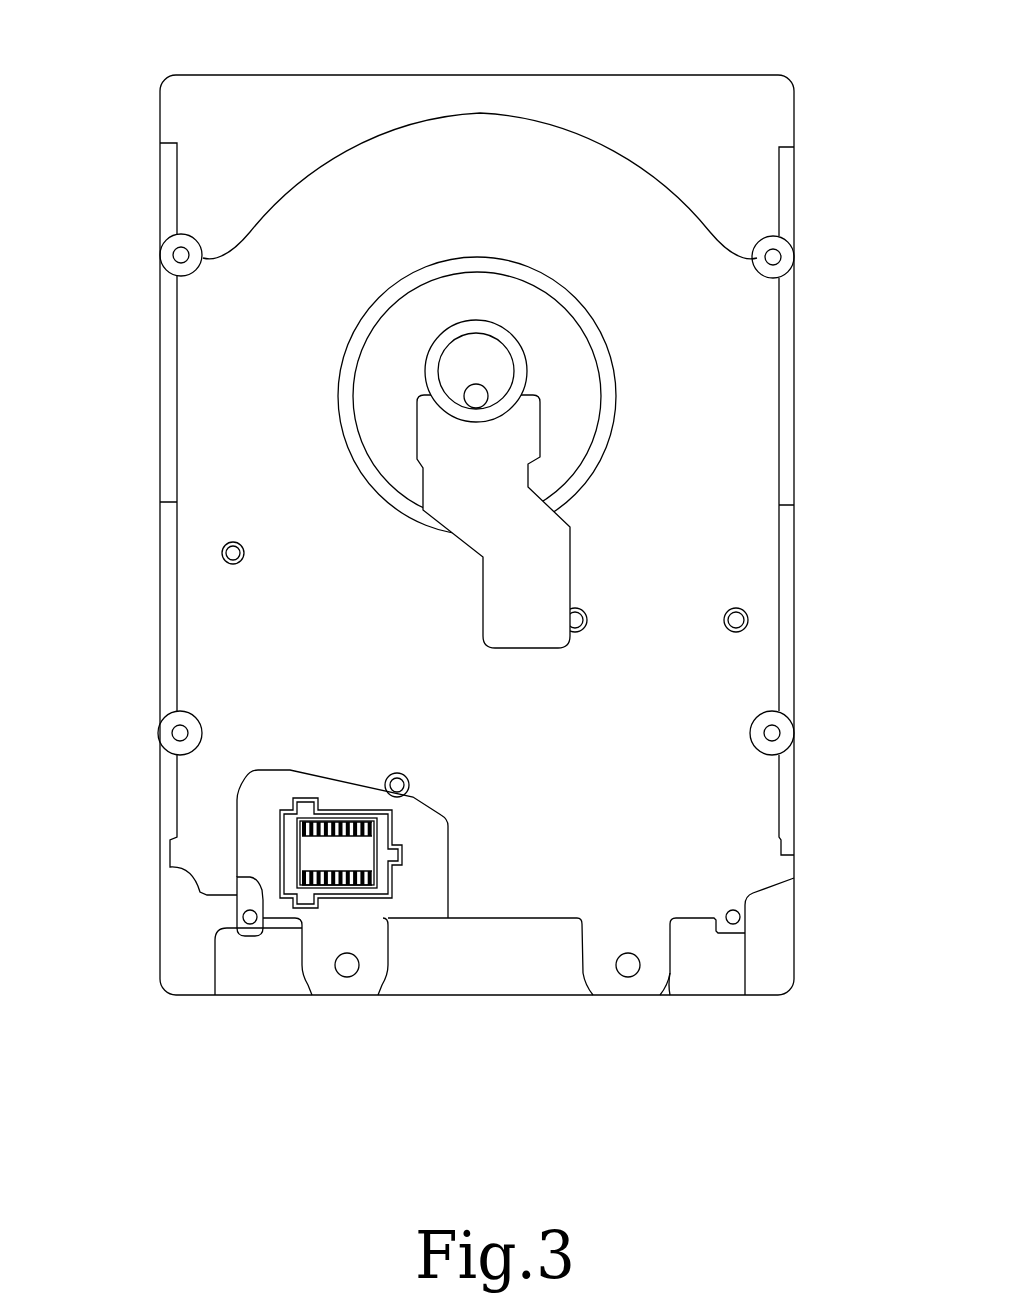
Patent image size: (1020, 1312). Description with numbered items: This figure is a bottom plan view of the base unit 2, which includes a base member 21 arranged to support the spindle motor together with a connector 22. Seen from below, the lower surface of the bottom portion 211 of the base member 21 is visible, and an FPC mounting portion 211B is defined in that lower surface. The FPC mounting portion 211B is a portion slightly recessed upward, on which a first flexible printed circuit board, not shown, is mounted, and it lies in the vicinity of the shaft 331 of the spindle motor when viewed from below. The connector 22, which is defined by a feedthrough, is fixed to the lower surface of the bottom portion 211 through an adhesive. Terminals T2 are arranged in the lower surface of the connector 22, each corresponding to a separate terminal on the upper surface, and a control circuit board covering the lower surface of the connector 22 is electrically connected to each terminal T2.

The base unit 2 is at (647, 62).
The base member 21 is at (750, 74).
The bottom portion 211 is at (535, 878).
The FPC mounting portion 211B is at (557, 557).
The connector 22 is at (250, 953).
The terminals T2 is at (363, 888).
The shaft 331 is at (485, 383).